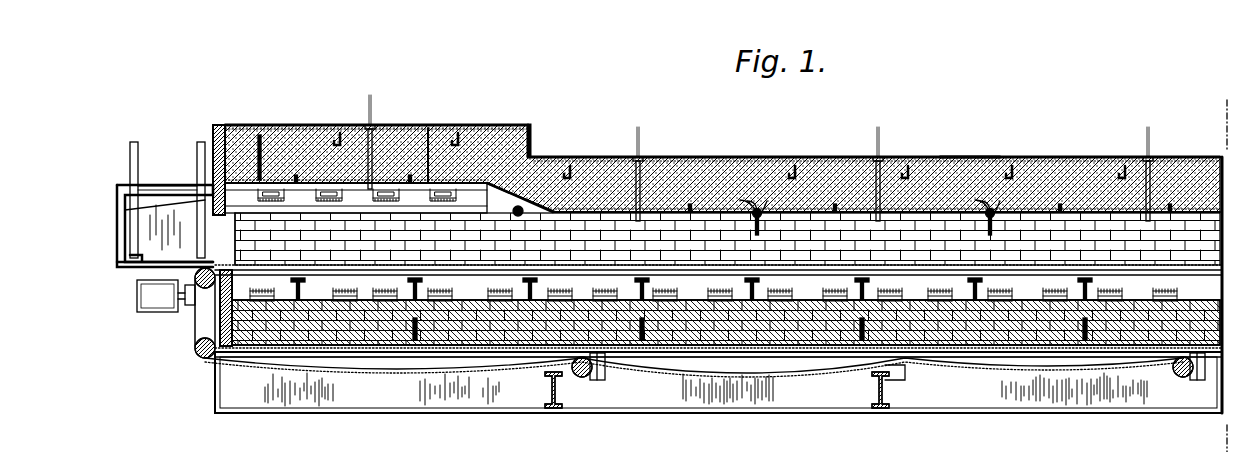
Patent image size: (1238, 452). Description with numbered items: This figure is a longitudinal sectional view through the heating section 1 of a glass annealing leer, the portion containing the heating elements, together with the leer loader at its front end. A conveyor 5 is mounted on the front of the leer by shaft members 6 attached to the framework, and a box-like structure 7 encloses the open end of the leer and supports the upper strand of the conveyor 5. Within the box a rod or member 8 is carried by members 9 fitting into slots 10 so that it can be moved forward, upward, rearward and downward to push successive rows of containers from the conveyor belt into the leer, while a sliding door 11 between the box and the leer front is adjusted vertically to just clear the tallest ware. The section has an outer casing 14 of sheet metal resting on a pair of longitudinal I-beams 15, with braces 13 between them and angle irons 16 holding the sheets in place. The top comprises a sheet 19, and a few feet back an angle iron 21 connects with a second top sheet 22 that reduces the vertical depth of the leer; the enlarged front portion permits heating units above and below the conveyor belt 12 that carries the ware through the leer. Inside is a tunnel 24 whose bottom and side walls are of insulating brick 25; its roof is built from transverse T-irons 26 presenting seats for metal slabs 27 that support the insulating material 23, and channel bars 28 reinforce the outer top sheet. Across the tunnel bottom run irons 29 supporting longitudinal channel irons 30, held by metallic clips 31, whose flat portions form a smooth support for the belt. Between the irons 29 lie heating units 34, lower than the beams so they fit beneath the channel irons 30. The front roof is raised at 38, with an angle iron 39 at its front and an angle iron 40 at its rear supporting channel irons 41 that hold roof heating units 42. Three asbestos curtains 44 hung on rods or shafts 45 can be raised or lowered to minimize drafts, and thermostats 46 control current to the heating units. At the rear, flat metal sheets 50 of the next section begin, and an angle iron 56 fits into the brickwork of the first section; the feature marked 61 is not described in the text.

The heating section 1 is at (654, 246).
The conveyor 5 is at (150, 300).
The shaft members 6 is at (203, 292).
The box-like structure 7 is at (160, 195).
The rod or member 8 is at (122, 262).
The members 9 is at (130, 153).
The slots 10 is at (178, 185).
The sliding door 11 is at (220, 130).
The conveyor belt 12 is at (403, 183).
The braces 13 is at (563, 395).
The outer casing 14 is at (302, 125).
The I-beams 15 is at (648, 145).
The angle irons 16 is at (366, 345).
The top sheet 19 is at (445, 140).
The angle iron 21 is at (520, 160).
The second top sheet 22 is at (600, 160).
The insulating material 23 is at (950, 158).
The tunnel 24 is at (195, 340).
The insulating brick 25 is at (518, 145).
The T-irons 26 is at (491, 183).
The metal slabs 27 is at (428, 128).
The channel bars 28 is at (472, 133).
The irons 29 is at (222, 365).
The channel irons 30 is at (555, 273).
The metallic clips 31 is at (428, 300).
The heating units 34 is at (420, 300).
The raised portion 38 is at (210, 183).
The angle iron 39 is at (205, 200).
The angle iron 40 is at (490, 170).
The channel irons 41 is at (260, 135).
The heating units 42 is at (272, 189).
The curtains 44 is at (580, 150).
The rods or shafts 45 is at (545, 205).
The thermostats 46 is at (370, 110).
The flat metal sheets 50 is at (1212, 212).
The angle iron 56 is at (1212, 285).
The idler roller 61 is at (585, 378).